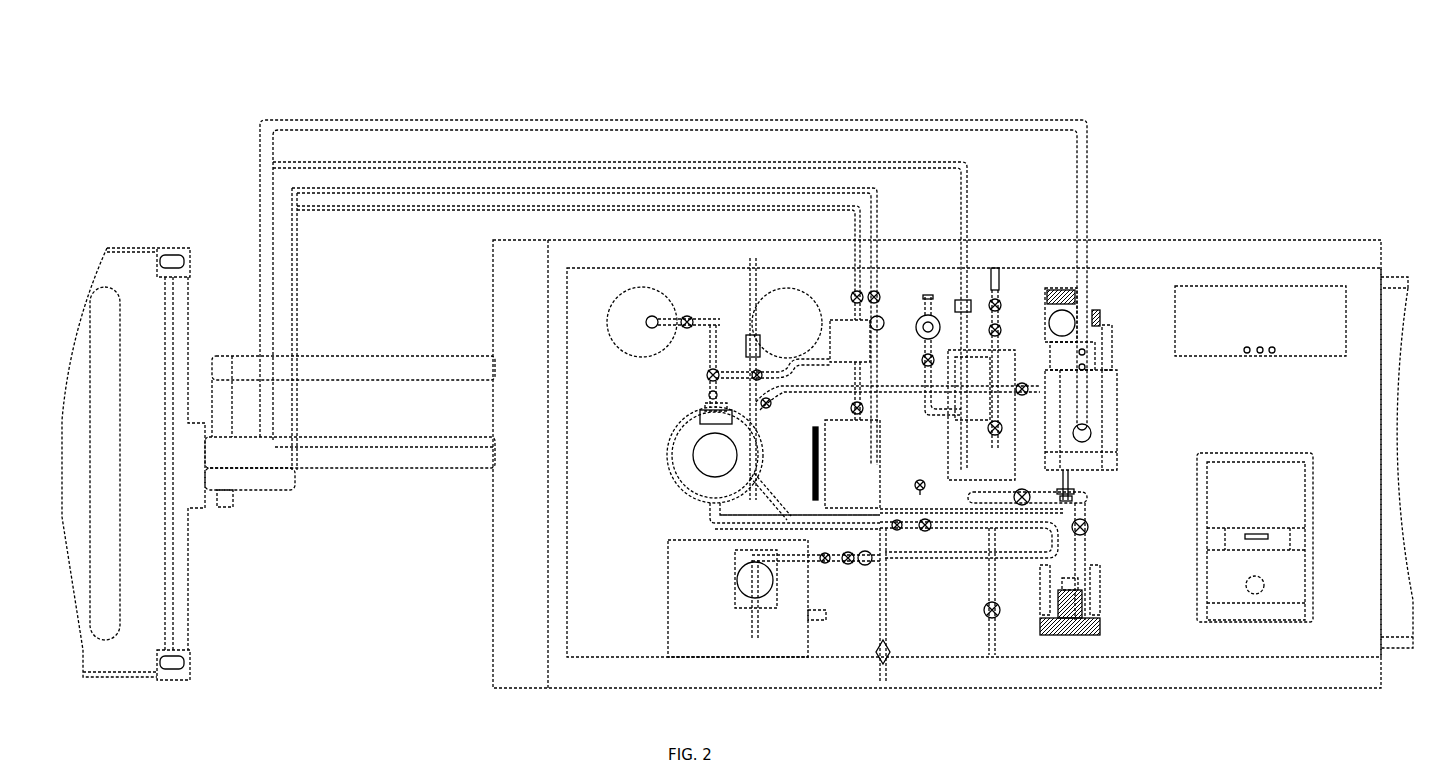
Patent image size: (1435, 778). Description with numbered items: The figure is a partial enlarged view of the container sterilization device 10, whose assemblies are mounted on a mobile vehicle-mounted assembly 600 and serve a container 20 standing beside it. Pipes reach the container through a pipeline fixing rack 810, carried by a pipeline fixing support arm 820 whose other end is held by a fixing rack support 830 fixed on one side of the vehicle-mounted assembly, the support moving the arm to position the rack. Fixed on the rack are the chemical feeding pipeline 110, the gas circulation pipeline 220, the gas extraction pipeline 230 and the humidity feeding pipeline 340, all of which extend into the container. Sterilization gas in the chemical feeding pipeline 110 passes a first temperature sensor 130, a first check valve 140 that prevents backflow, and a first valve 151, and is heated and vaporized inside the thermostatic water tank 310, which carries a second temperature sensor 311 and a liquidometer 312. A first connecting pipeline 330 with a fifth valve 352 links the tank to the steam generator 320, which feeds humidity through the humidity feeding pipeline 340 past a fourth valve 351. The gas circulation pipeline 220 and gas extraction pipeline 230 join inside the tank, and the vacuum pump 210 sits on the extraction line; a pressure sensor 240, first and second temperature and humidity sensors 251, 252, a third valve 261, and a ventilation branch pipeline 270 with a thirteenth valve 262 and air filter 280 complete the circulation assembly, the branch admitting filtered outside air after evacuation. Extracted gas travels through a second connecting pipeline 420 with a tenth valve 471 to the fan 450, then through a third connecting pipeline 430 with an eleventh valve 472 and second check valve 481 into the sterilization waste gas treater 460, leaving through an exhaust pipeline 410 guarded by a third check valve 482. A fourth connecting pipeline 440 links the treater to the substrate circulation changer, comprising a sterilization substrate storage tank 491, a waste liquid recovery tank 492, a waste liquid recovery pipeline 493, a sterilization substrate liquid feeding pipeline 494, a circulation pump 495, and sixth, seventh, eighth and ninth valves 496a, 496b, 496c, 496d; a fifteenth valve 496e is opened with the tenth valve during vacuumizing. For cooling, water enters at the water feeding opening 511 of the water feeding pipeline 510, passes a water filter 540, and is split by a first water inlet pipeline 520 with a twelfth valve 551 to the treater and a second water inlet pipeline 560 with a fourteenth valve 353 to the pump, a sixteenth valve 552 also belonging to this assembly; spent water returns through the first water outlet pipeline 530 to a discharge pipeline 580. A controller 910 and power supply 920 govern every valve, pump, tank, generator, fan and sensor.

The container sterilization device 10 is at (1138, 122).
The container 20 is at (170, 250).
The chemical feeding pipeline 110 is at (865, 240).
The first temperature sensor 130 is at (897, 320).
The first check valve 140 is at (880, 350).
The first valve 151 is at (879, 292).
The vacuum pump 210 is at (1108, 442).
The gas circulation pipeline 220 is at (968, 214).
The gas extraction pipeline 230 is at (1090, 198).
The pressure sensor 240 is at (968, 304).
The first temperature and humidity sensor 251 is at (1090, 416).
The second temperature and humidity sensor 252 is at (1088, 360).
The third valve 261 is at (1063, 475).
The thirteenth valve 262 is at (922, 360).
The ventilation branch pipeline 270 is at (924, 407).
The air filter 280 is at (932, 311).
The thermostatic water tank 310 is at (824, 457).
The second temperature sensor 311 is at (922, 480).
The liquidometer 312 is at (910, 438).
The steam generator 320 is at (842, 388).
The first connecting pipeline 330 is at (870, 387).
The humidity feeding pipeline 340 is at (874, 228).
The fourth valve 351 is at (851, 295).
The fifth valve 352 is at (851, 410).
The fourteenth valve 353 is at (1002, 426).
The exhaust pipeline 410 is at (758, 272).
The second connecting pipeline 420 is at (1089, 531).
The third connecting pipeline 430 is at (818, 529).
The fourth connecting pipeline 440 is at (698, 415).
The fan 450 is at (1093, 606).
The sterilization waste gas treater 460 is at (688, 470).
The tenth valve 471 is at (1089, 521).
The eleventh valve 472 is at (930, 531).
The second check valve 481 is at (914, 510).
The third check valve 482 is at (761, 342).
The sterilization substrate storage tank 491 is at (800, 300).
The waste liquid recovery tank 492 is at (655, 298).
The waste liquid recovery pipeline 493 is at (668, 318).
The sterilization substrate liquid feeding pipeline 494 is at (798, 374).
The circulation pump 495 is at (718, 348).
The sixth valve 496a is at (693, 318).
The seventh valve 496b is at (706, 375).
The eighth valve 496c is at (708, 397).
The ninth valve 496d is at (763, 372).
The fifteenth valve 496e is at (998, 604).
The water feeding pipeline 510 is at (1002, 331).
The water feeding opening 511 is at (1001, 274).
The first water inlet pipeline 520 is at (772, 404).
The first water outlet pipeline 530 is at (770, 496).
The water filter 540 is at (1002, 307).
The twelfth valve 551 is at (812, 433).
The sixteenth valve 552 is at (1022, 382).
The second water inlet pipeline 560 is at (964, 390).
The discharge pipeline 580 is at (888, 614).
The mobile vehicle-mounted assembly 600 is at (1272, 238).
The pipeline fixing rack 810 is at (200, 512).
The pipeline fixing support arm 820 is at (412, 468).
The fixing rack support 830 is at (494, 572).
The controller 910 is at (1280, 292).
The power supply 920 is at (1252, 462).